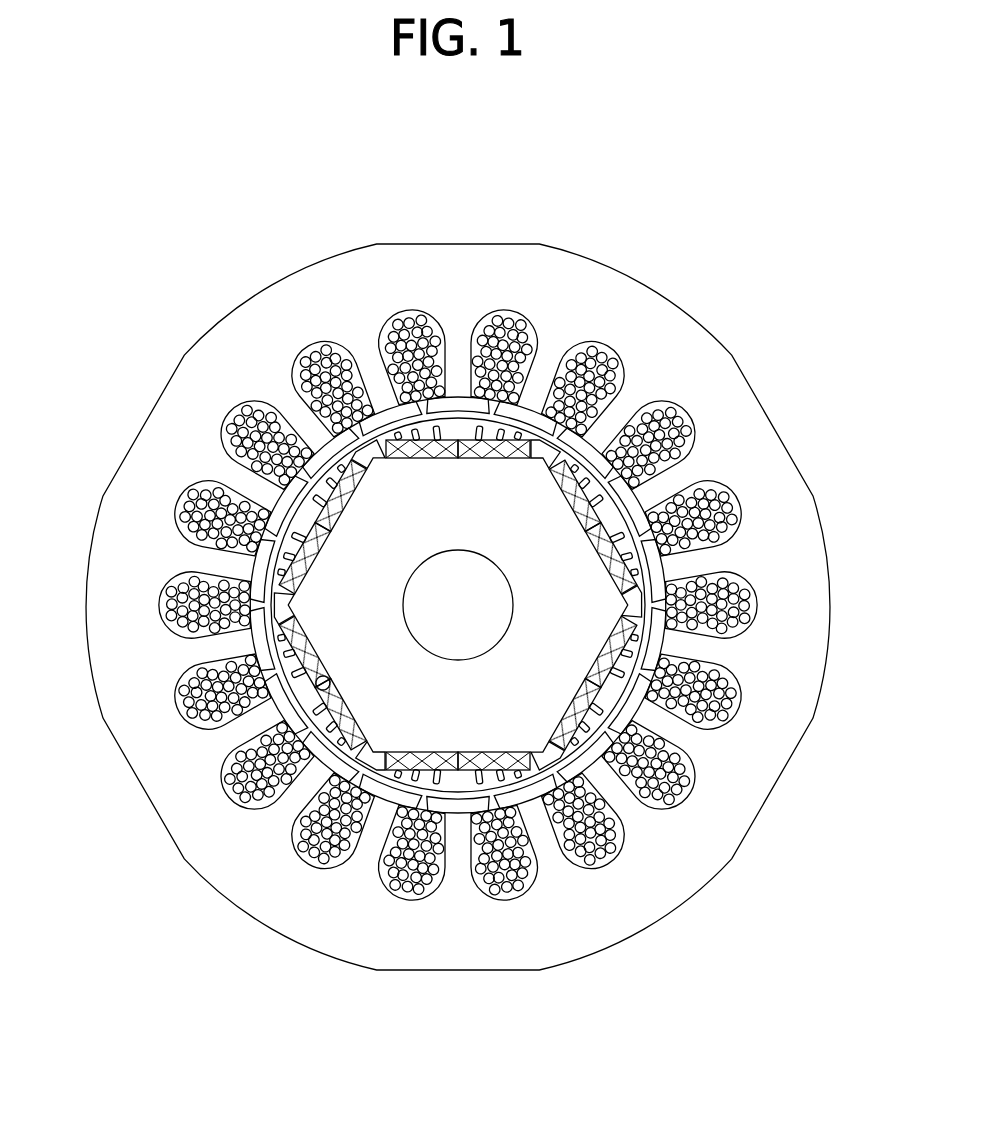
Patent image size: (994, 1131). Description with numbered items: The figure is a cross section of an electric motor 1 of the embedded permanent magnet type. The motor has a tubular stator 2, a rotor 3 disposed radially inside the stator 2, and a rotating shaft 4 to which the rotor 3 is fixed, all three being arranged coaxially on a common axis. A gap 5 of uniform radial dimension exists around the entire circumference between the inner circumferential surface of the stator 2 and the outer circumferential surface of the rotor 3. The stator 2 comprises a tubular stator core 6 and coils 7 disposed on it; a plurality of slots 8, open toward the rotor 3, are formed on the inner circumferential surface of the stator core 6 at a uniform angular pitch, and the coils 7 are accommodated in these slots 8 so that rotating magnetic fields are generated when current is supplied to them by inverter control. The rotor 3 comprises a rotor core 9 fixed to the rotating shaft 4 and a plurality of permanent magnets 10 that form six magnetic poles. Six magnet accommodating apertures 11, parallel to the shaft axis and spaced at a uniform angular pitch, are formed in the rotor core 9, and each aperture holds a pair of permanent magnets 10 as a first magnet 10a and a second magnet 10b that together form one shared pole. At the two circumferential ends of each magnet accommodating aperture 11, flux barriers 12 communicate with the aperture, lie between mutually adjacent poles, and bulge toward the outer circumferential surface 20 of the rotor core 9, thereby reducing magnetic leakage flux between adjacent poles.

The electric motor 1 is at (214, 267).
The stator 2 is at (709, 335).
The rotor 3 is at (588, 512).
The rotating shaft 4 is at (487, 603).
The gap 5 is at (647, 643).
The stator core 6 is at (748, 780).
The coils 7 is at (740, 710).
The slots 8 is at (693, 792).
The rotor core 9 is at (340, 548).
The permanent magnets 10 is at (388, 1032).
The first magnets 10a is at (480, 773).
The second magnets 10b is at (425, 773).
The magnet accommodating apertures 11 is at (327, 684).
The flux barriers 12 is at (383, 782).
The outer circumferential surface 20 is at (348, 744).